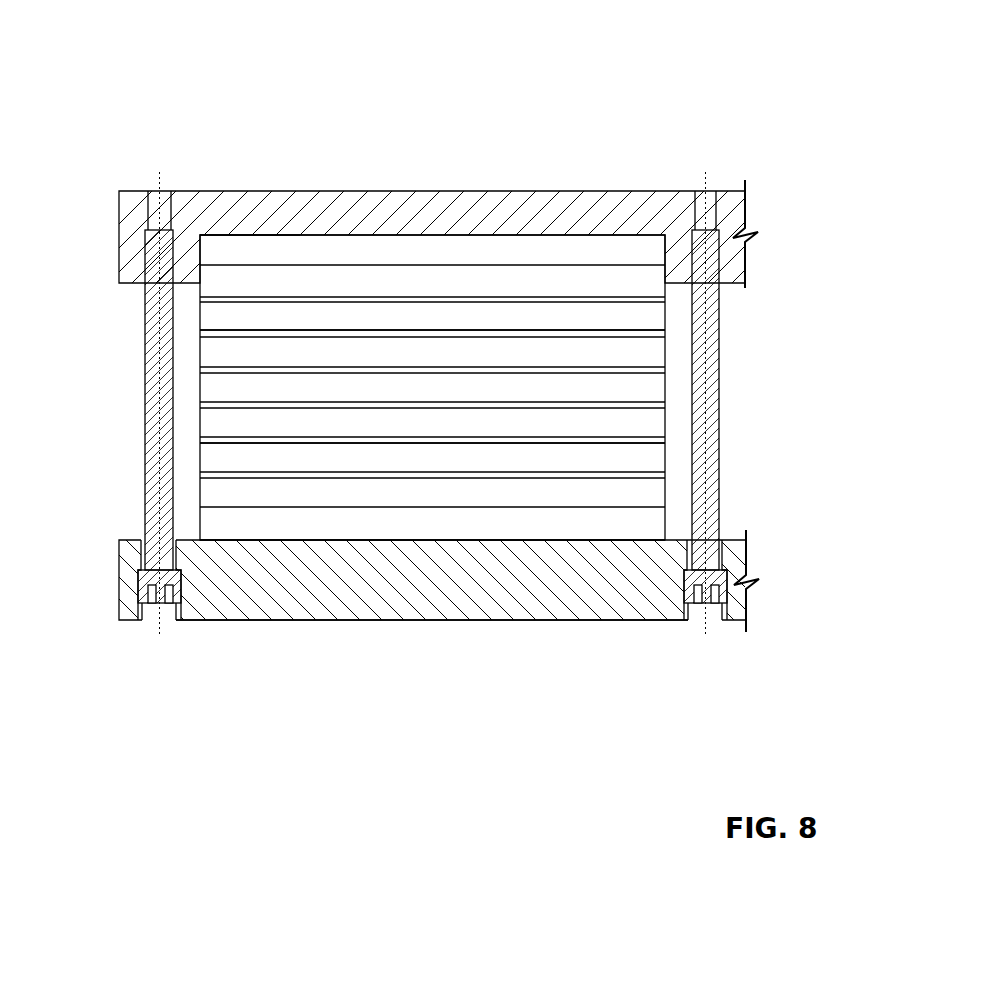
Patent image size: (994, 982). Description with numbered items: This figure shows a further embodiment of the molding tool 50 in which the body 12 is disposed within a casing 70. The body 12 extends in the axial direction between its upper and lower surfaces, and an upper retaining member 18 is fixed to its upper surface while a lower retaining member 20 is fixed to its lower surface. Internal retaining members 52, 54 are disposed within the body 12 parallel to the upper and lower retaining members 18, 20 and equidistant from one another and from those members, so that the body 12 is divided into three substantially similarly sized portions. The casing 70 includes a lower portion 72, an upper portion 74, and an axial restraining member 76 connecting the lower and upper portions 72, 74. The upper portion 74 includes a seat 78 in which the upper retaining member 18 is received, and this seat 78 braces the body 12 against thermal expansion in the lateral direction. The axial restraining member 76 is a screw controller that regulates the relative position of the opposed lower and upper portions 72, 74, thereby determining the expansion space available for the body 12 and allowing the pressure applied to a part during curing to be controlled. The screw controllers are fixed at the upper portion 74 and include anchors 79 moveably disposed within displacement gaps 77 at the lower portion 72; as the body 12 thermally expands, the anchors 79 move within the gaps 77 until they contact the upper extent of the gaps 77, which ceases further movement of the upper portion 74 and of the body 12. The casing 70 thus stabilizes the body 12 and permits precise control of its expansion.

The tool 50 is at (590, 66).
The upper portion 74 is at (515, 190).
The upper retaining member 18 is at (573, 248).
The body 12 is at (223, 423).
The seat 78 is at (253, 236).
The internal retaining member 52 is at (665, 330).
The axial restraining member 76 is at (719, 372).
The internal retaining member 54 is at (662, 445).
The casing 70 is at (119, 575).
The lower portion 72 is at (440, 622).
The lower retaining member 20 is at (495, 523).
The anchors 79 is at (170, 603).
The displacement gaps 77 is at (147, 624).